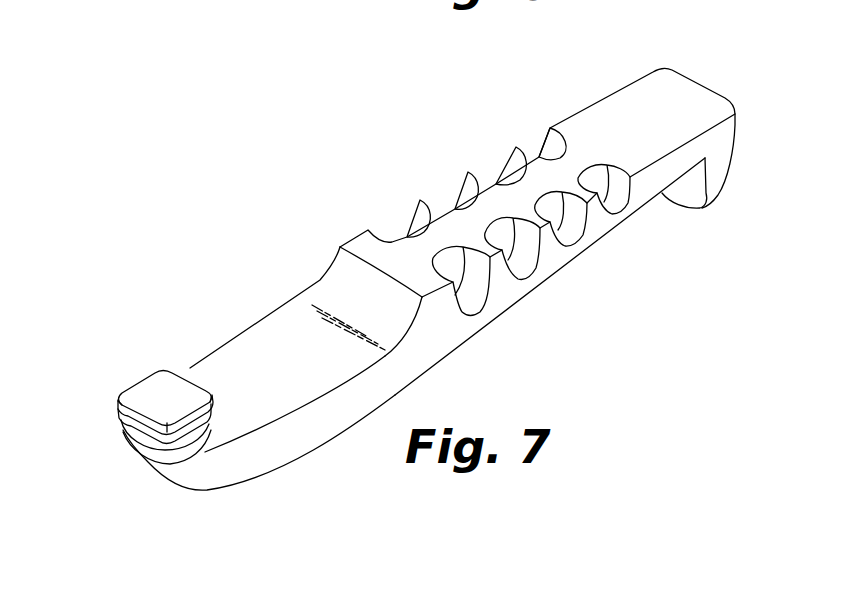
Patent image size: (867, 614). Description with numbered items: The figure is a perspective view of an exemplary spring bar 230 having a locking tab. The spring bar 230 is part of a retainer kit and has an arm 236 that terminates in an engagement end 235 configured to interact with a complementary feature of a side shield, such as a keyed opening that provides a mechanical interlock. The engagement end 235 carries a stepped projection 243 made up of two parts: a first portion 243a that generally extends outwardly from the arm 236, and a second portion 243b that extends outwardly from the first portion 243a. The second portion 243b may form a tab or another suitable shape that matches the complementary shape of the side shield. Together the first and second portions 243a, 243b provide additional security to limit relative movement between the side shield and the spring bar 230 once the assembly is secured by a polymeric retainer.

The spring bar 230 is at (681, 41).
The engagement end 235 is at (114, 446).
The arm 236 is at (252, 418).
The cap 243 is at (144, 378).
The first portion 243a is at (165, 433).
The second portion 243b is at (188, 423).